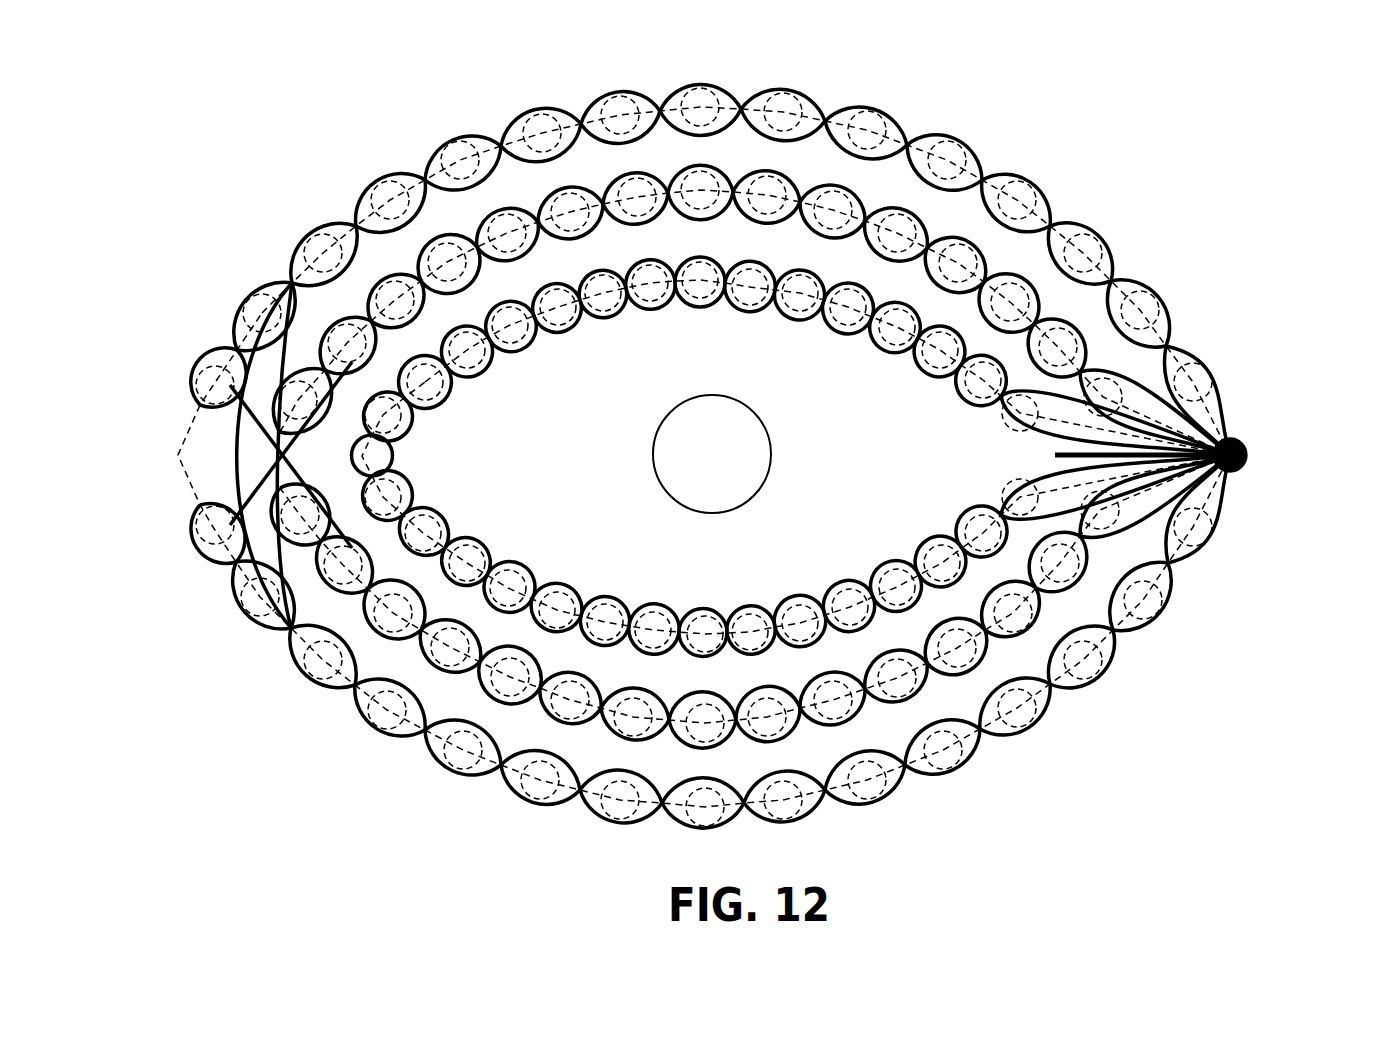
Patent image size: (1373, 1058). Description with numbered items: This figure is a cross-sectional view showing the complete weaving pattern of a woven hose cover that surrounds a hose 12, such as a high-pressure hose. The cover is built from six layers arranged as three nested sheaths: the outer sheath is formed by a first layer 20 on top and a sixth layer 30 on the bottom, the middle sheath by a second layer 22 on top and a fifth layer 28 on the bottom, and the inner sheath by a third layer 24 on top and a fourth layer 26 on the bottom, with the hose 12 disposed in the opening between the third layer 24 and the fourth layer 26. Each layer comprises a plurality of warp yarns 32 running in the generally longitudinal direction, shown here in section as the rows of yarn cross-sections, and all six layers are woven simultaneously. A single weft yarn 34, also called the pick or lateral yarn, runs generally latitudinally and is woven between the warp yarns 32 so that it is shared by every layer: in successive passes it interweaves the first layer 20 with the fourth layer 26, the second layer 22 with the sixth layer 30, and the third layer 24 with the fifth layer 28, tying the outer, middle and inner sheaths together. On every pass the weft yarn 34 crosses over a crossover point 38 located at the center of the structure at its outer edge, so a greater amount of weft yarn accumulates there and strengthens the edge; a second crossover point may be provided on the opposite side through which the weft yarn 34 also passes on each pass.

The hose 12 is at (758, 491).
The first layer 20 is at (240, 340).
The second layer 22 is at (280, 418).
The third layer 24 is at (360, 440).
The fourth layer 26 is at (335, 505).
The fifth layer 28 is at (300, 530).
The sixth layer 30 is at (185, 490).
The warp yarns 32 is at (1023, 186).
The weft yarn 34 is at (1134, 283).
The crossover point 38 is at (1244, 446).